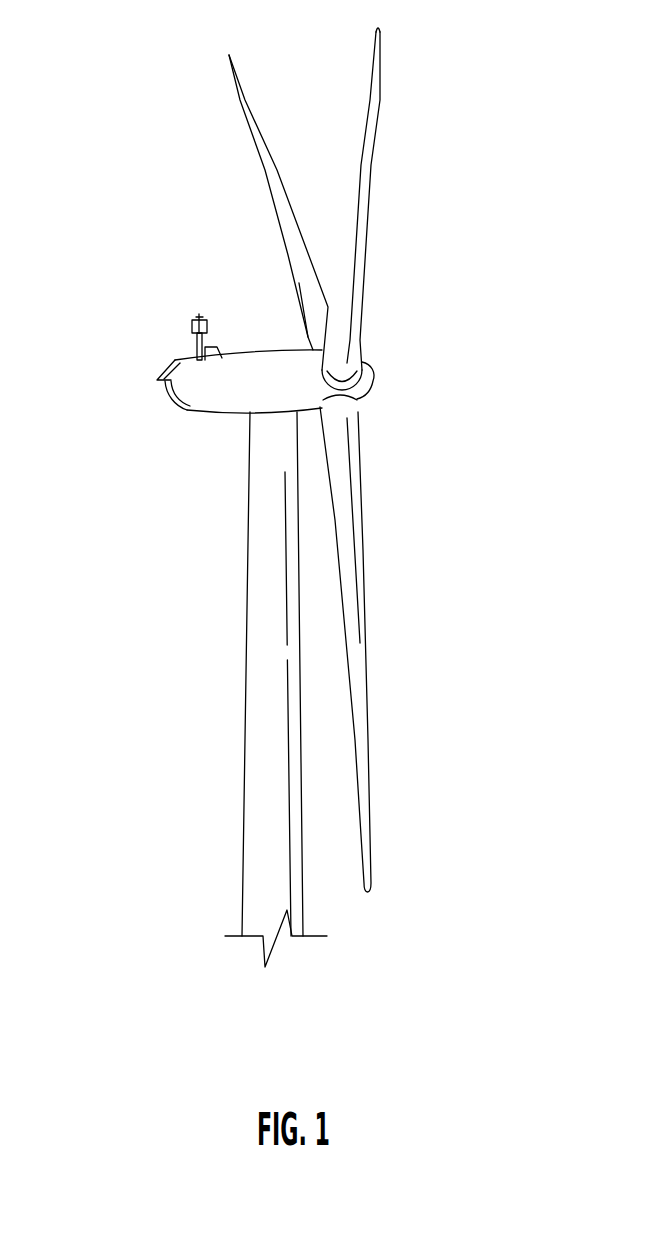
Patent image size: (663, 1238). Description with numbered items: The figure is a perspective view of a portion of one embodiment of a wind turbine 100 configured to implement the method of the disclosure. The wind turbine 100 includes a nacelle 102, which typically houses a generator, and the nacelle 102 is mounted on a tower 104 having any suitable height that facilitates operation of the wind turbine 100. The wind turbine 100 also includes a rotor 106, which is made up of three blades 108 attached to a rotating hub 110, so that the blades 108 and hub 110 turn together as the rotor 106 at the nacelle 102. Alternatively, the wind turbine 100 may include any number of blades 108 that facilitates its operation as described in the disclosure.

The wind turbine 100 is at (128, 141).
The nacelle 102 is at (210, 432).
The tower 104 is at (248, 732).
The rotor 106 is at (463, 288).
The blades 108 is at (282, 180).
The rotating hub 110 is at (374, 388).